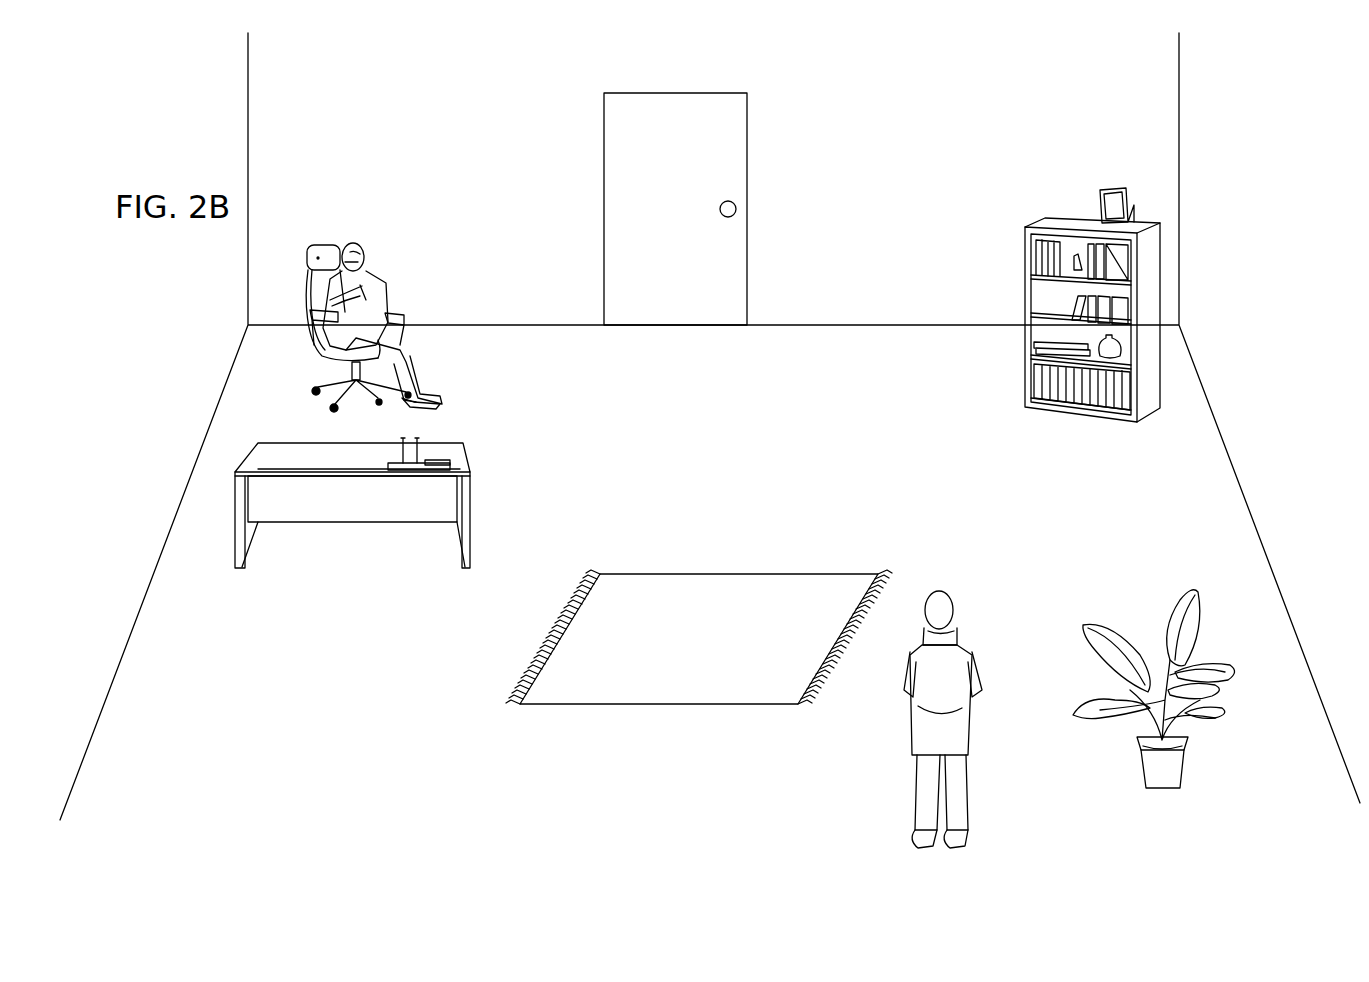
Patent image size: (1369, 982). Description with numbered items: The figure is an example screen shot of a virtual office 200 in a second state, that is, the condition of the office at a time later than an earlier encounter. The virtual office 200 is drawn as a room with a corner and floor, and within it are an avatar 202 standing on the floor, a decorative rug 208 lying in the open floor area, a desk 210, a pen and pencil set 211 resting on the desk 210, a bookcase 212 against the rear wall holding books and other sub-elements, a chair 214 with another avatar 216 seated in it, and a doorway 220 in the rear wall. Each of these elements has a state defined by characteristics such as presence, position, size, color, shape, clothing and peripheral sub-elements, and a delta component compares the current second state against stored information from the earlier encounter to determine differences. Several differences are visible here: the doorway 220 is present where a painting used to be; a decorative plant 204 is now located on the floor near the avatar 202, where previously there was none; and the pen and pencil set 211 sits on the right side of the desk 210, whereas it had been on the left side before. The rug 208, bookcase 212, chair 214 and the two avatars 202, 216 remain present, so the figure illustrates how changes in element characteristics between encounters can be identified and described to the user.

The virtual office 200 is at (448, 95).
The avatar 202 is at (968, 645).
The decorative plant 204 is at (1083, 625).
The decorative rug 208 is at (650, 695).
The desk 210 is at (303, 510).
The pen and pencil set 211 is at (437, 453).
The bookcase 212 is at (1025, 262).
The chair 214 is at (320, 245).
The avatar 216 is at (410, 349).
The doorway 220 is at (747, 158).